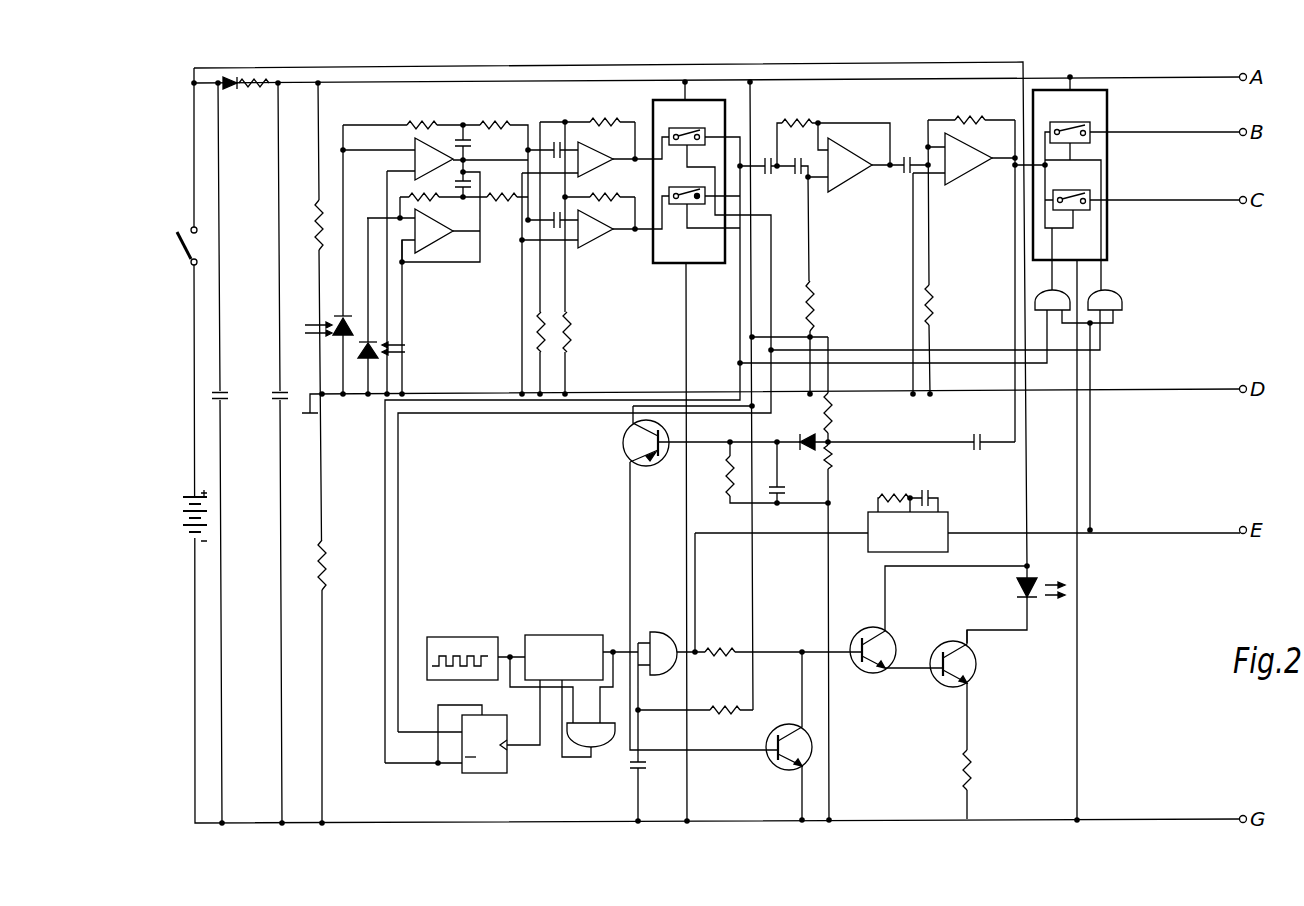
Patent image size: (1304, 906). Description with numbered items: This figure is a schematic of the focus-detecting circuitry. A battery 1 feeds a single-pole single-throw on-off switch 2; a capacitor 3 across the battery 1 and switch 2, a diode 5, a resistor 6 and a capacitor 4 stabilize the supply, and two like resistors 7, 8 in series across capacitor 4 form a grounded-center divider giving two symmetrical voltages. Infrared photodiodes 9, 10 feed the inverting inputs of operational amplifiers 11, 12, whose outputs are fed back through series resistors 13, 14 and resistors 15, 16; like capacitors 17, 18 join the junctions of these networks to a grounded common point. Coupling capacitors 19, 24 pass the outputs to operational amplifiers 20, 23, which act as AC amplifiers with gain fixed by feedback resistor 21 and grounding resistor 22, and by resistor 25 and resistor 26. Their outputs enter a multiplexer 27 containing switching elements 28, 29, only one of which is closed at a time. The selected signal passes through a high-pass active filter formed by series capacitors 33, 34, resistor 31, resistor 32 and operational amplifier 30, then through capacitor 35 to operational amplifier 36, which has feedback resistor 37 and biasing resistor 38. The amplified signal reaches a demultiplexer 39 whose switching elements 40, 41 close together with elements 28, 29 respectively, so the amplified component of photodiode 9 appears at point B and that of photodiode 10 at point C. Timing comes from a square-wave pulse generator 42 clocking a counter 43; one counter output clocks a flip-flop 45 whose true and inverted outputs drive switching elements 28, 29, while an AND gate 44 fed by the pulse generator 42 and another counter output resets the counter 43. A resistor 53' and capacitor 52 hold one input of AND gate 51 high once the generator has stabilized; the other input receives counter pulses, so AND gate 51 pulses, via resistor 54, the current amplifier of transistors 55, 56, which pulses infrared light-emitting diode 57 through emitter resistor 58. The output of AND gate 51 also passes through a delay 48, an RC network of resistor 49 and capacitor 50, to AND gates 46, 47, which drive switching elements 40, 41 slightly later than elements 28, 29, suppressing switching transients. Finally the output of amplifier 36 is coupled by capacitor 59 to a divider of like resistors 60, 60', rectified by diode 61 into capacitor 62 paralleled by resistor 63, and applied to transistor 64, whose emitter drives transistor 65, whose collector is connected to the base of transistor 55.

The battery 1 is at (188, 522).
The single-pole single-throw switch 2 is at (190, 226).
The capacitor 3 is at (232, 399).
The capacitor 4 is at (276, 392).
The diode 5 is at (230, 92).
The resistor 6 is at (256, 92).
The resistor 7 is at (314, 228).
The resistor 8 is at (330, 583).
The infrared photodiode 9 is at (340, 310).
The infrared photodiode 10 is at (380, 356).
The operational amplifier 11 is at (412, 158).
The operational amplifier 12 is at (442, 236).
The resistor 13 is at (405, 121).
The resistor 14 is at (490, 120).
The resistor 15 is at (406, 197).
The resistor 16 is at (494, 200).
The capacitor 17 is at (457, 137).
The capacitor 18 is at (478, 181).
The coupling capacitor 19 is at (555, 141).
The operational amplifier 20 is at (596, 153).
The resistor 21 is at (604, 119).
The resistor 22 is at (538, 330).
The operational amplifier 23 is at (597, 242).
The coupling capacitor 24 is at (557, 232).
The resistor 25 is at (609, 194).
The resistor 26 is at (570, 333).
The multiplexer 27 is at (667, 265).
The switching element 28 is at (711, 126).
The switching element 29 is at (678, 206).
The operational amplifier 30 is at (860, 184).
The resistor 31 is at (811, 118).
The resistor 32 is at (816, 312).
The capacitor 33 is at (769, 176).
The capacitor 34 is at (798, 176).
The capacitor 35 is at (903, 180).
The operational amplifier 36 is at (964, 177).
The resistor 37 is at (968, 117).
The resistor 38 is at (938, 310).
The demultiplexer 39 is at (1090, 100).
The switching element 40 is at (1058, 122).
The switching element 41 is at (1066, 190).
The square-wave pulse generator 42 is at (458, 645).
The counter 43 is at (544, 640).
The AND gate 44 is at (598, 748).
The flip-flop 45 is at (510, 768).
The AND gate 46 is at (1122, 298).
The AND gate 47 is at (1040, 293).
The delay 48 is at (948, 536).
The resistor 49 is at (895, 492).
The capacitor 50 is at (925, 490).
The AND gate 51 is at (658, 629).
The capacitor 52 is at (666, 767).
The resistor 53' is at (717, 725).
The resistor 54 is at (720, 645).
The transistor 55 is at (871, 671).
The transistor 56 is at (977, 664).
The infrared light-emitting diode 57 is at (1016, 592).
The resistor 58 is at (975, 772).
The coupling capacitor 59 is at (978, 452).
The resistor 60 is at (850, 457).
The resistor 60' is at (857, 413).
The diode 61 is at (812, 433).
The capacitor 62 is at (790, 489).
The resistor 63 is at (727, 462).
The transistor 64 is at (627, 441).
The transistor 65 is at (789, 724).